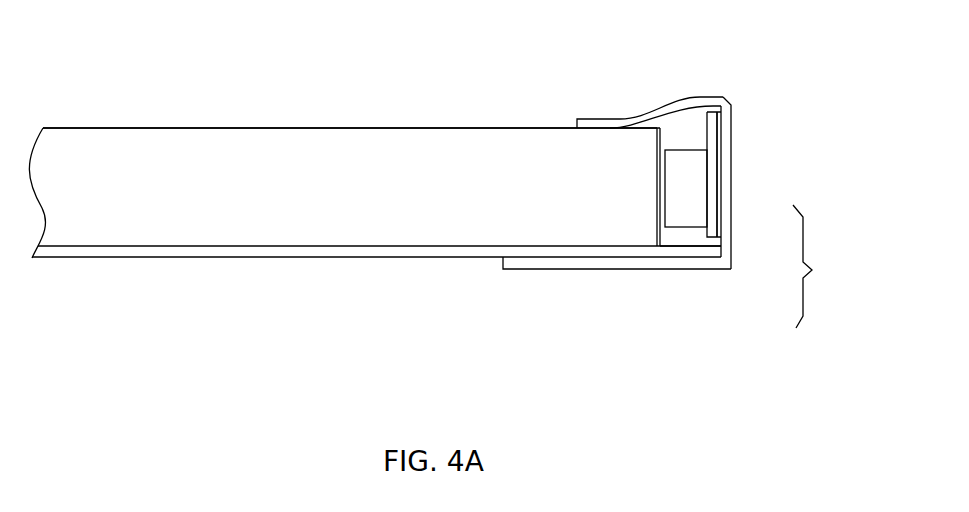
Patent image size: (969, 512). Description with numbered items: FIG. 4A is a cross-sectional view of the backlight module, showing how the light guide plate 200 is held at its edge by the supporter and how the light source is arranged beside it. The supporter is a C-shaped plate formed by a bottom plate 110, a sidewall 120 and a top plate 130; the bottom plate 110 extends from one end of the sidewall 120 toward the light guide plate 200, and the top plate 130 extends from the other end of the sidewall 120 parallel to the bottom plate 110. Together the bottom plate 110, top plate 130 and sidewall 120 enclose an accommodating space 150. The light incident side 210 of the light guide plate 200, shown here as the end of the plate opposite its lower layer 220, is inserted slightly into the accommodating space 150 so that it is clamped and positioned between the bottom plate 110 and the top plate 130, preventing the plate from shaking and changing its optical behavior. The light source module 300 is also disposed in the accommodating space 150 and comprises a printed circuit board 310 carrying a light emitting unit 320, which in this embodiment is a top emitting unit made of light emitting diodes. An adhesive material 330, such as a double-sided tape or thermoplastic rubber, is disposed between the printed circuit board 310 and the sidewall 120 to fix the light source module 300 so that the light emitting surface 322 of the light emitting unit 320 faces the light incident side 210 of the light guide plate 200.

The bottom plate 110 is at (545, 266).
The sidewall 120 is at (725, 125).
The top plate 130 is at (687, 97).
The accommodating space 150 is at (684, 236).
The light guide plate 200 is at (365, 197).
The light incident side 210 is at (660, 138).
The second substrate 220 is at (252, 250).
The light source module 300 is at (821, 266).
The printed circuit board 310 is at (707, 235).
The light emitting unit 320 is at (697, 182).
The light emitting surface 322 is at (660, 173).
The adhesive material 330 is at (718, 162).